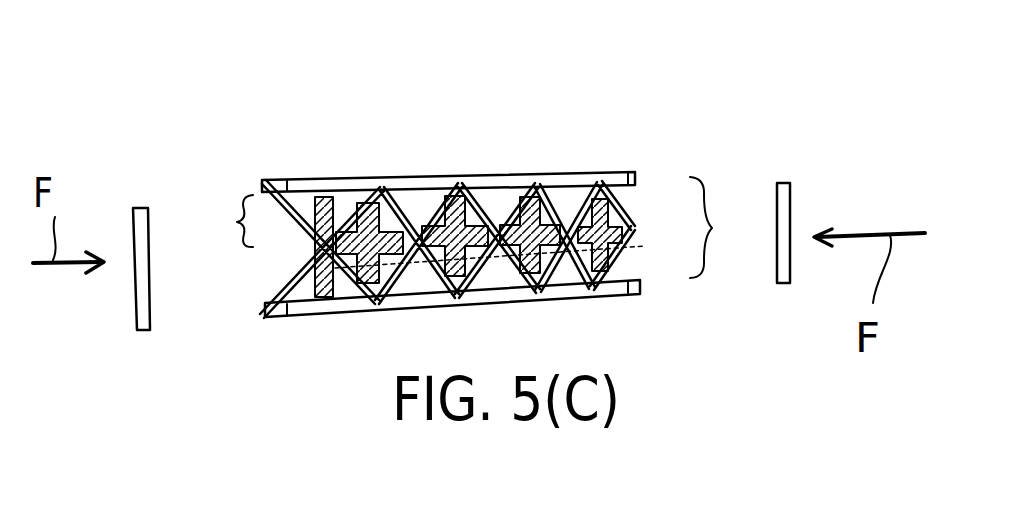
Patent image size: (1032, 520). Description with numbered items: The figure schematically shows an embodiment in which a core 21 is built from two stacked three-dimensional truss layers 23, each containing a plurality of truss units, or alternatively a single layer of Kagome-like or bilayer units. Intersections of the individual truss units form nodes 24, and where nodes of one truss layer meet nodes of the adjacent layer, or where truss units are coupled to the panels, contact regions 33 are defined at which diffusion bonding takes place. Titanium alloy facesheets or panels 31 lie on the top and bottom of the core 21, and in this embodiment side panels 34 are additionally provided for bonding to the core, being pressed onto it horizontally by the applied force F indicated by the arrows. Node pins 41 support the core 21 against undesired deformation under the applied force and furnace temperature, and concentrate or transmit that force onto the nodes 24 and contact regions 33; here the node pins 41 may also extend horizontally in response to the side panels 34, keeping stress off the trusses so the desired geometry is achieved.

The core structure 21 is at (723, 227).
The three-dimensional truss layer 23 is at (235, 222).
The nodes 24 is at (270, 182).
The facesheets or panels 31 is at (295, 178).
The contact regions 33 is at (275, 181).
The side panels 34 is at (135, 298).
The node pins 41 is at (360, 178).